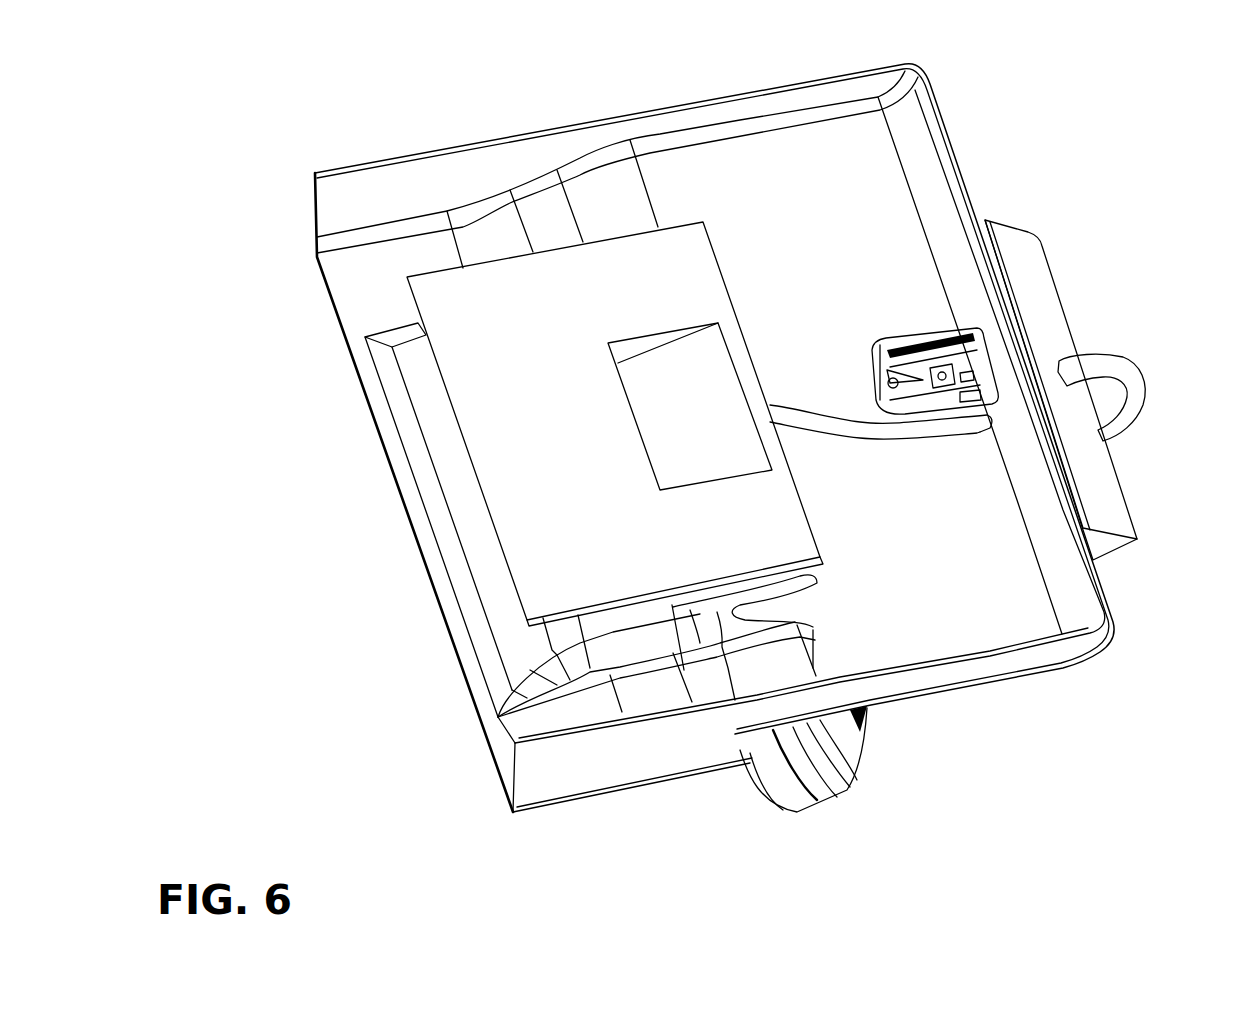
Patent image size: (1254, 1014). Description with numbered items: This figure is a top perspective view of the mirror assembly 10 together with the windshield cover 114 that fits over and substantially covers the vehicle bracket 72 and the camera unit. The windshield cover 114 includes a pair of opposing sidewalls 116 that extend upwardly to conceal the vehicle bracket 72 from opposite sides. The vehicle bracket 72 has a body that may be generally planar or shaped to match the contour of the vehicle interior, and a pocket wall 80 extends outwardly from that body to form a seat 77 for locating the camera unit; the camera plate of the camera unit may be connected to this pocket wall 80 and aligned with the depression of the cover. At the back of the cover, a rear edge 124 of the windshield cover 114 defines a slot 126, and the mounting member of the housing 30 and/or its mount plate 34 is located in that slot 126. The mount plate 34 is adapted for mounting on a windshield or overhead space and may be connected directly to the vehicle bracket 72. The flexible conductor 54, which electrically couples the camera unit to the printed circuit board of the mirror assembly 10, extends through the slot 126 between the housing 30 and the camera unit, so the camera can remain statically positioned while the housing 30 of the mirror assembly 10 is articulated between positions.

The mirror assembly 10 is at (1180, 186).
The housing 30 is at (822, 787).
The mount plate 34 is at (942, 368).
The flexible conductor 54 is at (870, 428).
The vehicle bracket 72 is at (428, 270).
The seat 77 is at (702, 395).
The pocket wall 80 is at (627, 350).
The windshield cover 114 is at (305, 190).
The sidewalls 116 is at (500, 160).
The rear edge 124 is at (942, 215).
The slot 126 is at (985, 366).